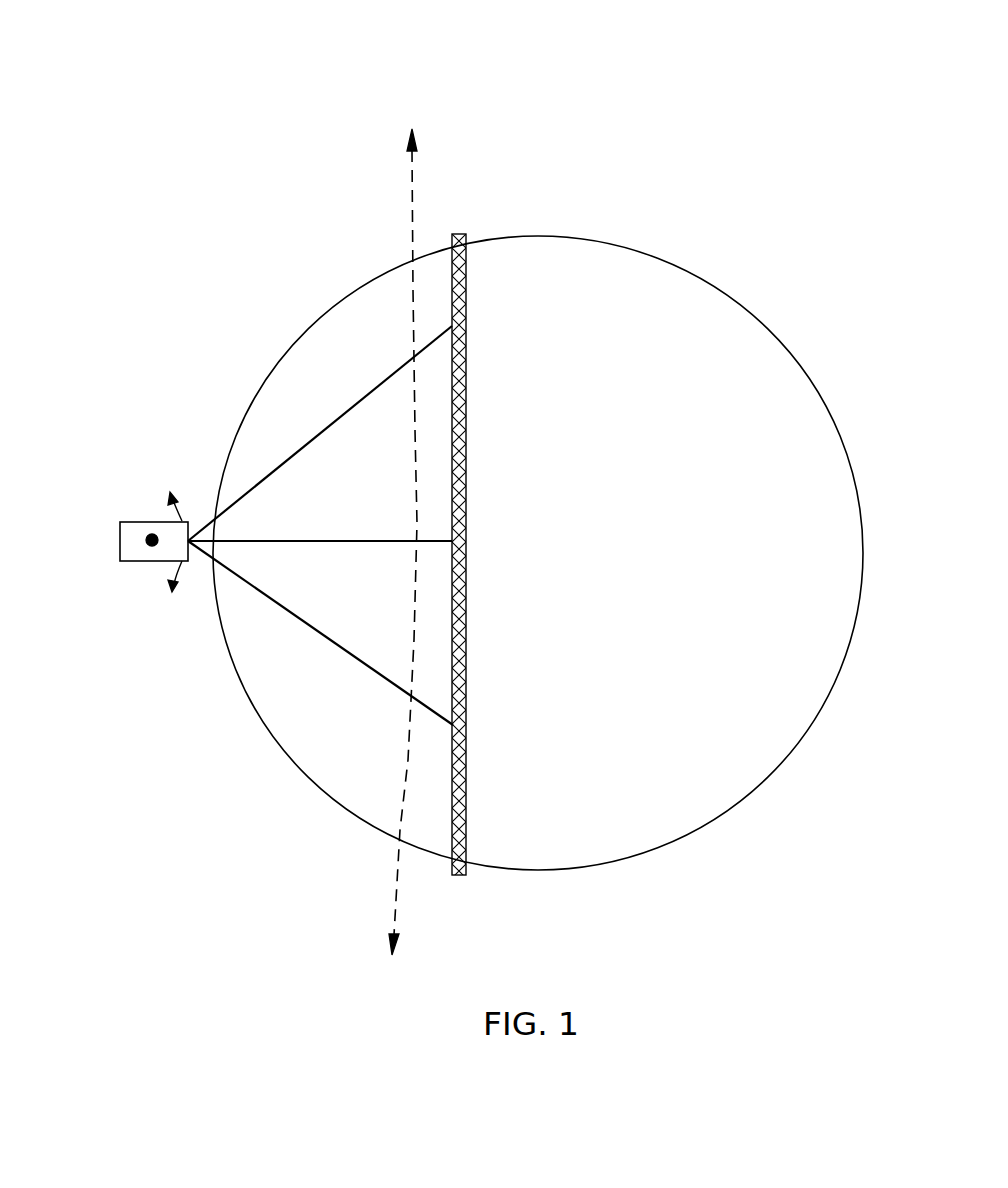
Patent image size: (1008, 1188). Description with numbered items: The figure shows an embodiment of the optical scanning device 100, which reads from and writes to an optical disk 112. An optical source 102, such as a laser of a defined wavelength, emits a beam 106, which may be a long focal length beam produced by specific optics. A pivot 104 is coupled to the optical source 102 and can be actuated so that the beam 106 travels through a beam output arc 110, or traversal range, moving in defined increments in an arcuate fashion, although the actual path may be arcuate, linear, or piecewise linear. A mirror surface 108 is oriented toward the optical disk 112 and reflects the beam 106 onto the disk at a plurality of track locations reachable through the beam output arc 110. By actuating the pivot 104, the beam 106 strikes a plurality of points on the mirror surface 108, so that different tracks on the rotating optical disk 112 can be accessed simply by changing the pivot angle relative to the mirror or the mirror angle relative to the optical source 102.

The optical scanning device 100 is at (284, 72).
The optical source 102 is at (120, 543).
The pivot 104 is at (150, 541).
The beam 106 is at (205, 518).
The mirror surface 108 is at (466, 277).
The beam output arc 110 is at (413, 333).
The optical disk 112 is at (824, 402).